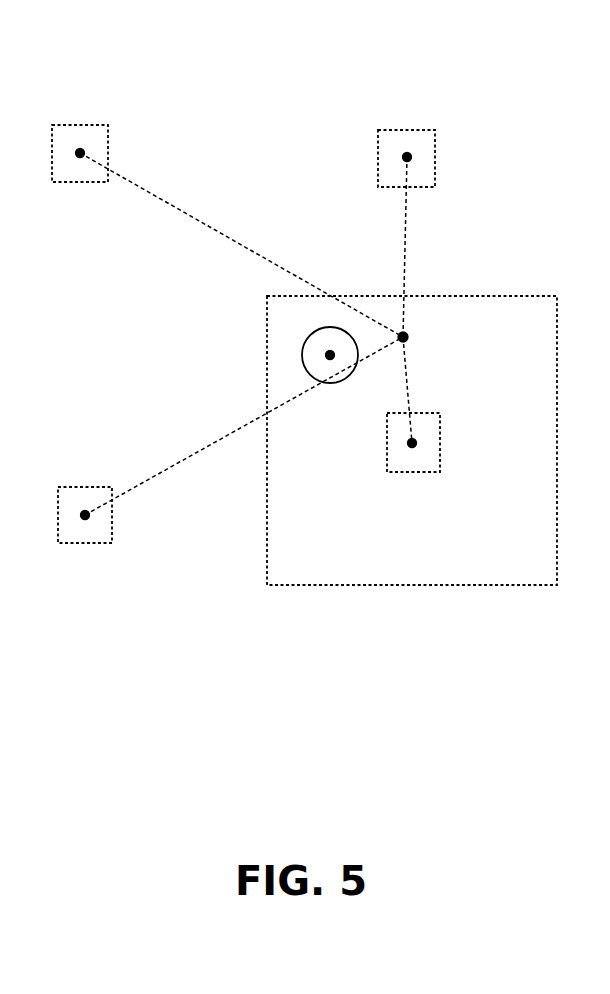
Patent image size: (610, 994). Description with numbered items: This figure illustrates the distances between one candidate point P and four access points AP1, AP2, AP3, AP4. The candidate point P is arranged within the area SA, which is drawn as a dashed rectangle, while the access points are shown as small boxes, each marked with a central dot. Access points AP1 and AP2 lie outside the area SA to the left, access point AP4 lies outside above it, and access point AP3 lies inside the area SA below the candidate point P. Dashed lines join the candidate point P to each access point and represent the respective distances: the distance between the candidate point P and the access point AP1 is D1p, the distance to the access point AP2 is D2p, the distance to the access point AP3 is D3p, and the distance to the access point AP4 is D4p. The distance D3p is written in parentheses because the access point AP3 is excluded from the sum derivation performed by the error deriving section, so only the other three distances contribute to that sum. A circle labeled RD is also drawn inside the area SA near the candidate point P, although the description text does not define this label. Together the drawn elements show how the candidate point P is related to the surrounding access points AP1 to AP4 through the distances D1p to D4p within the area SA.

The access point AP1 is at (89, 487).
The access point AP2 is at (83, 124).
The access point AP3 is at (412, 472).
The access point AP4 is at (409, 130).
The distance D1p is at (244, 426).
The distance D2p is at (241, 245).
The distance D3p is at (450, 390).
The distance D4p is at (437, 247).
The candidate point P is at (403, 337).
The radio device / terminal RD is at (322, 383).
The area SA is at (420, 590).